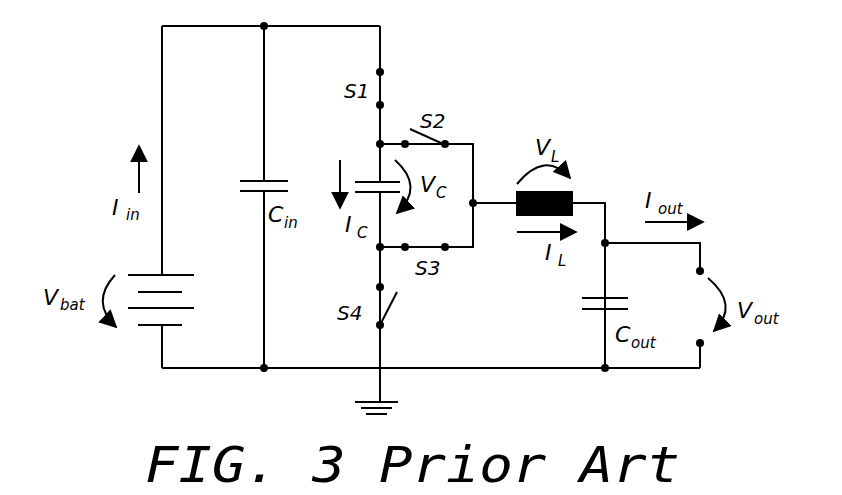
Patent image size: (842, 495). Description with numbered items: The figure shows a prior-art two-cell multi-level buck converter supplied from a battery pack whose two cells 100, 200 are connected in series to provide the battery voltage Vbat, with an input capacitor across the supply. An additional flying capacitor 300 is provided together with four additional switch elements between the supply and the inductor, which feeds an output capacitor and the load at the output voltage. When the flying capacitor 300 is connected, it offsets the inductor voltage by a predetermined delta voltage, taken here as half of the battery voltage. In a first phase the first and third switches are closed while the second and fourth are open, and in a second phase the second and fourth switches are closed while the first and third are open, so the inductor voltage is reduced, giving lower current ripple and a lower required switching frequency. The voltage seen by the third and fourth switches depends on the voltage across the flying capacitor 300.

The cell 100 is at (138, 336).
The cell 200 is at (133, 268).
The flying capacitor 300 is at (362, 160).